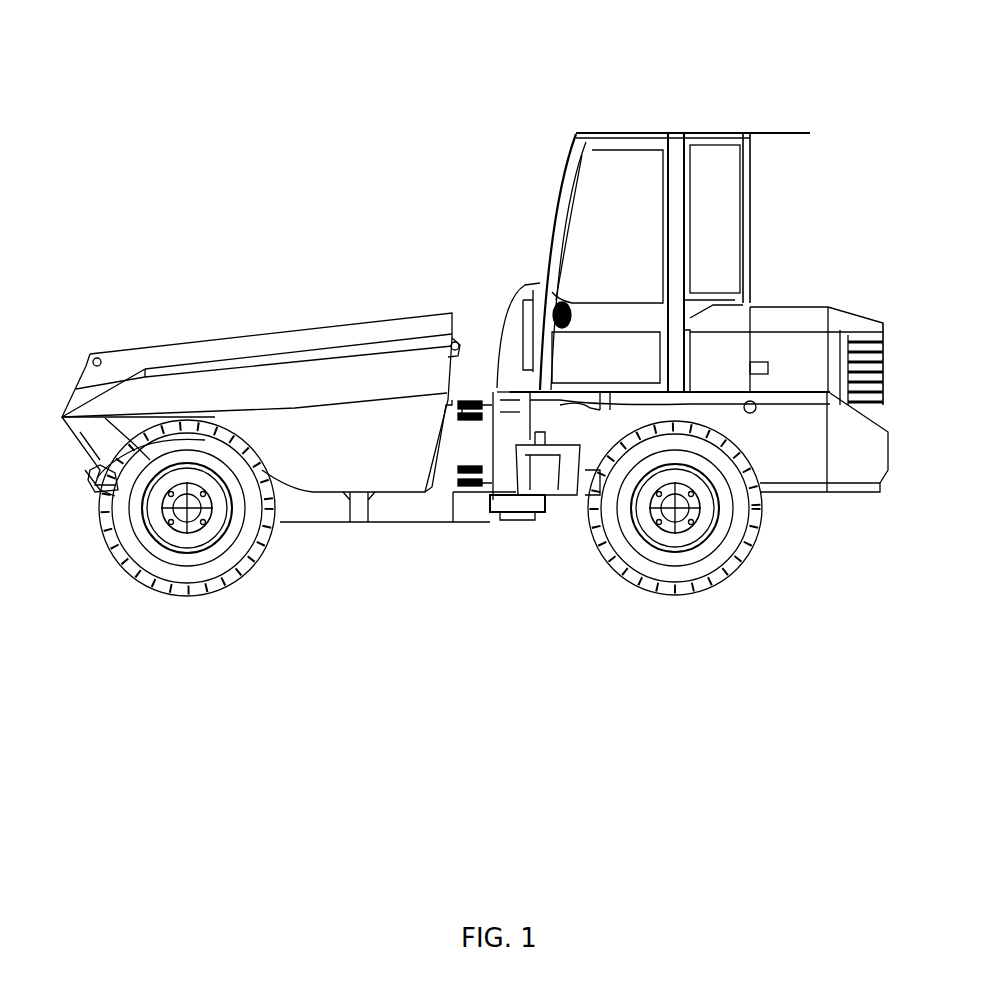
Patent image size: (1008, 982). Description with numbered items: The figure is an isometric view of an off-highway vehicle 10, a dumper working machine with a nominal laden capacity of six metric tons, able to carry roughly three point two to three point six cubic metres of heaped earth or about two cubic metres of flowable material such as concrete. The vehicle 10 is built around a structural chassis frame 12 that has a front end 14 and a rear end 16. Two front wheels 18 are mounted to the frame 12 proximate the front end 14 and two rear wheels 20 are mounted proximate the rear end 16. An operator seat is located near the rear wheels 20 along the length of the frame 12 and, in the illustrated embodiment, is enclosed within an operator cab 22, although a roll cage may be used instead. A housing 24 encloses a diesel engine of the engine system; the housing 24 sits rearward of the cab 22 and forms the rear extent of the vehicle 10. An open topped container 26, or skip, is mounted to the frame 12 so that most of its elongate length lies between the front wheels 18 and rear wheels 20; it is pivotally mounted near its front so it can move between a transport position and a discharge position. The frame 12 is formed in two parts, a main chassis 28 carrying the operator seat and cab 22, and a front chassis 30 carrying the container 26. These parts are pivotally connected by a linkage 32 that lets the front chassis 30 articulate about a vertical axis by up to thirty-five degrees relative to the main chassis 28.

The off-highway vehicle 10 is at (763, 98).
The structural chassis frame 12 is at (482, 538).
The front end 14 is at (95, 485).
The rear end 16 is at (880, 483).
The front wheels 18 is at (190, 572).
The rear wheels 20 is at (670, 577).
The operator cab 22 is at (620, 163).
The housing 24 is at (778, 318).
The open topped container 26 is at (293, 365).
The main chassis 28 is at (568, 505).
The front chassis 30 is at (307, 505).
The linkage 32 is at (470, 400).